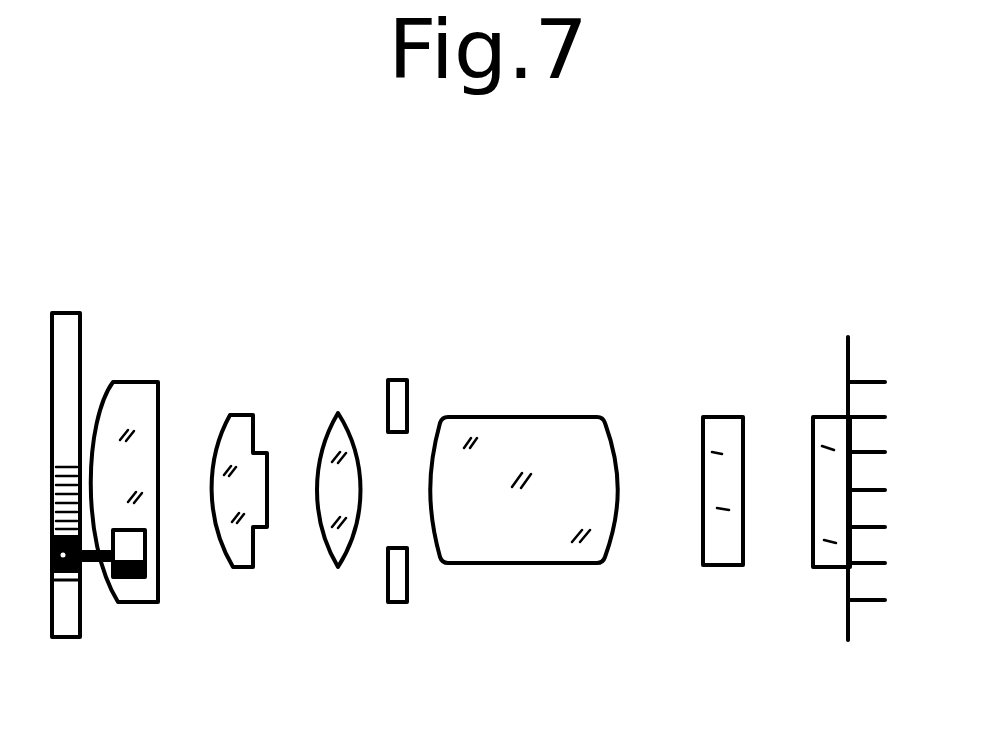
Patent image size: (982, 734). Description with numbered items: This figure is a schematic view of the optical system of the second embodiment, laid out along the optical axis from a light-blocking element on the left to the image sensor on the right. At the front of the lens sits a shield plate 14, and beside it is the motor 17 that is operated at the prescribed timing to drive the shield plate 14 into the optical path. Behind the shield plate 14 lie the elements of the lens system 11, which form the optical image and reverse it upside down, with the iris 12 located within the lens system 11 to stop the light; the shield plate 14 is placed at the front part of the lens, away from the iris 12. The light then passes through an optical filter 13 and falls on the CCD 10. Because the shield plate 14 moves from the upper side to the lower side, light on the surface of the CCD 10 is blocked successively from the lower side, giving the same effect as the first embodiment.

The CCD 10 is at (830, 433).
The lens system 11 is at (330, 420).
The iris 12 is at (398, 378).
The optical filter 13 is at (722, 437).
The shield plate 14 is at (64, 340).
The motor 17 is at (128, 580).